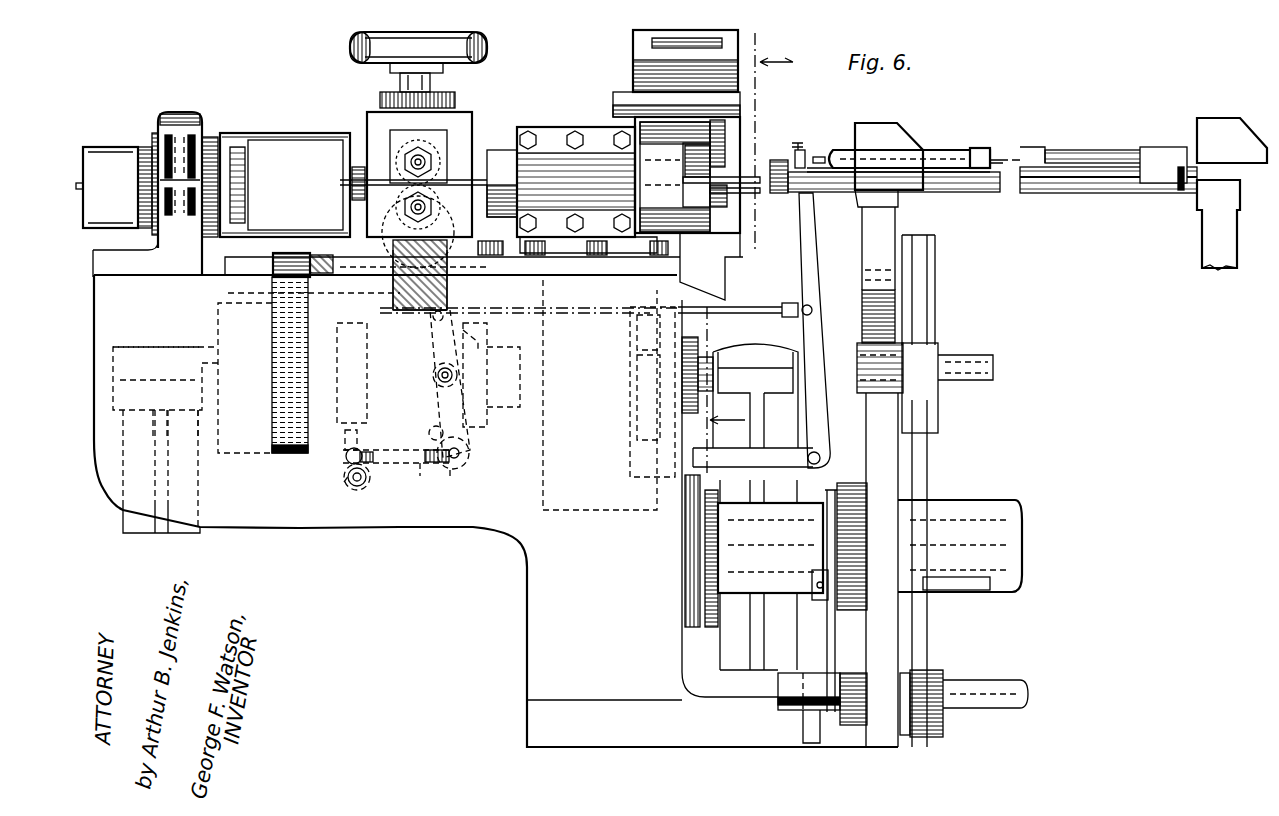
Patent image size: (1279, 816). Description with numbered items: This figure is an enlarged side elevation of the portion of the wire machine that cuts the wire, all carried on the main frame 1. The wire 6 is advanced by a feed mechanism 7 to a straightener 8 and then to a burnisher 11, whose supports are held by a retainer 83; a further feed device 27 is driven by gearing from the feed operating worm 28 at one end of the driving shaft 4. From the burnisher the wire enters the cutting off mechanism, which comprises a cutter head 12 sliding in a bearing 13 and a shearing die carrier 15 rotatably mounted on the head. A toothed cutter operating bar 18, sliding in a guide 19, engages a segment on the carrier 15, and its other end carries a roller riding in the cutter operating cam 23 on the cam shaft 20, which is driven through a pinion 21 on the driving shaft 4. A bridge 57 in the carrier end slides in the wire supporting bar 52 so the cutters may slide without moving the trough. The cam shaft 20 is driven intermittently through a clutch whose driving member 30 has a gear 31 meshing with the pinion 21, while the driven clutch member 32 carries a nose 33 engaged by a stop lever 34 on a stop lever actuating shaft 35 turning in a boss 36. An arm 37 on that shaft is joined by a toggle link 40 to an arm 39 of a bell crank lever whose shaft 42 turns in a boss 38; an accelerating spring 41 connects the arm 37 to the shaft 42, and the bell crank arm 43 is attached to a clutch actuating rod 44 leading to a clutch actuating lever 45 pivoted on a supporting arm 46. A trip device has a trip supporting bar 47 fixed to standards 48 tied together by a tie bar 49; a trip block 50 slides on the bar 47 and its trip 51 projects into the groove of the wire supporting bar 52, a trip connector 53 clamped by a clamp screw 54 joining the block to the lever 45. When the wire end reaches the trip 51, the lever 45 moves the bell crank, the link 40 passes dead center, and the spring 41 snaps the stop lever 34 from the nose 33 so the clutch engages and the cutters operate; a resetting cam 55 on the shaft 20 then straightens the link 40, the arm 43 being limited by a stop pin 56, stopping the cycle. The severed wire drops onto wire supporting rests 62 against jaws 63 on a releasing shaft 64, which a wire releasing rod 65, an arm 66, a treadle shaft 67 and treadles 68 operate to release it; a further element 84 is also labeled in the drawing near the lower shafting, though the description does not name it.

The frame 1 is at (527, 565).
The driving shaft 4 is at (240, 272).
The wire 6 is at (83, 186).
The feed mechanism 7 is at (751, 240).
The straightener 8 is at (105, 147).
The burnisher 11 is at (353, 173).
The cutter head 12 is at (497, 150).
The bearing 13 is at (545, 153).
The shearing die carrier 15 is at (722, 207).
The cutter operating bar 18 is at (677, 278).
The guide 19 is at (633, 68).
The cam shaft 20 is at (715, 378).
The pinion 21 is at (295, 255).
The cutter operating cam 23 is at (588, 495).
The feed device 27 is at (418, 162).
The feed operating worm 28 is at (416, 286).
The driving member 30 is at (268, 388).
The gear 31 is at (300, 375).
The driven clutch member 32 is at (368, 373).
The nose 33 is at (345, 436).
The stop lever 34 is at (346, 456).
The stop lever actuating shaft 35 is at (352, 488).
The boss 36 is at (368, 484).
The arm 37 is at (344, 482).
The boss 38 is at (466, 460).
The arm 39 is at (418, 480).
The link 40 is at (377, 444).
The accelerating spring 41 is at (450, 487).
The shaft 42 is at (470, 450).
The arm 43 is at (430, 345).
The clutch actuating rod 44 is at (590, 312).
The clutch actuating lever 45 is at (825, 255).
The supporting arm 46 is at (785, 460).
The trip supporting bar 47 is at (1080, 155).
The standards 48 is at (868, 282).
The tie bar 49 is at (987, 140).
The trip block 50 is at (1180, 170).
The trip 51 is at (1232, 194).
The wire supporting bar 52 is at (1075, 187).
The trip connector 53 is at (1010, 160).
The clamp screw 54 is at (1180, 190).
The resetting cam 55 is at (482, 343).
The stop pin 56 is at (429, 433).
The bridge 57 is at (778, 193).
The wire supporting rests 62 is at (870, 318).
The wire holding and releasing jaws 63 is at (942, 300).
The releasing shaft 64 is at (993, 368).
The wire releasing rod 65 is at (925, 465).
The arm 66 is at (935, 675).
The treadle shaft 67 is at (1020, 680).
The treadles 68 is at (790, 712).
The retainer 83 is at (255, 140).
The rod 84 is at (827, 630).